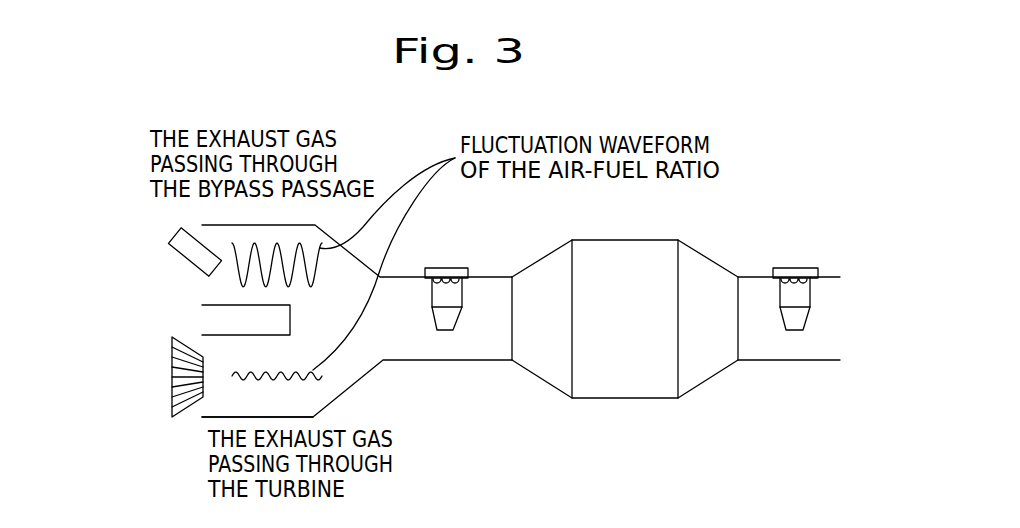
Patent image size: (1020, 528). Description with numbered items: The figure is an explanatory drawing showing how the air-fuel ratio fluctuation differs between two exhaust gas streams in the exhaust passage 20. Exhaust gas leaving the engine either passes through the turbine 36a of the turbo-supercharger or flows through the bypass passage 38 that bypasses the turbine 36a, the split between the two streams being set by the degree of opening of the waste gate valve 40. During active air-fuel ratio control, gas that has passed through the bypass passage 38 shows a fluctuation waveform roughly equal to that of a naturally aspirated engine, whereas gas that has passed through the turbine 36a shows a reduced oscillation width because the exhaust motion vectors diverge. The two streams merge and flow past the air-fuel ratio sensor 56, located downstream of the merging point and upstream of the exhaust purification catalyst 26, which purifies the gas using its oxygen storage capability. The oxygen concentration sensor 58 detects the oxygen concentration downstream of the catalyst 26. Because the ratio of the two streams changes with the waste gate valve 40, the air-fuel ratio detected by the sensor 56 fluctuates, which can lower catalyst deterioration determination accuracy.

The exhaust passage 20 is at (215, 405).
The exhaust purification catalyst 26 is at (627, 398).
The turbine 36a is at (172, 380).
The bypass passage 38 is at (217, 292).
The waste gate valve 40 is at (170, 238).
The air-fuel ratio sensor 56 is at (448, 268).
The oxygen concentration sensor 58 is at (793, 267).